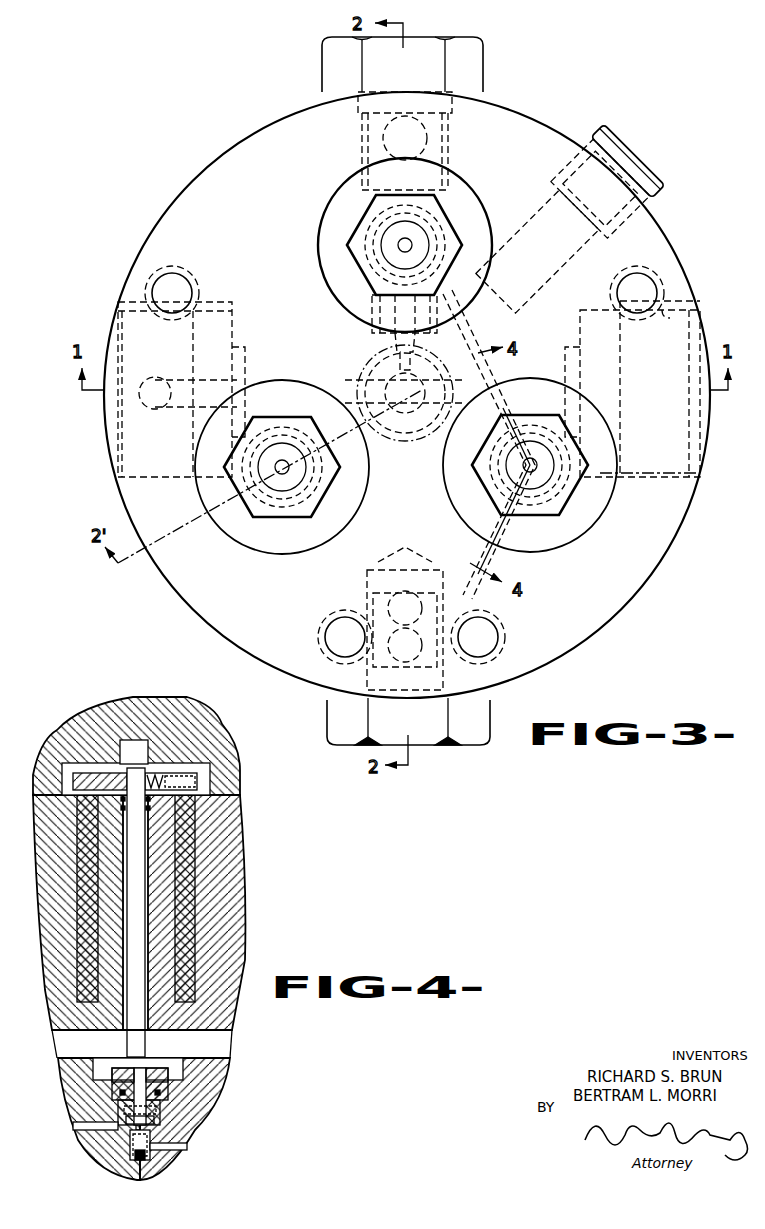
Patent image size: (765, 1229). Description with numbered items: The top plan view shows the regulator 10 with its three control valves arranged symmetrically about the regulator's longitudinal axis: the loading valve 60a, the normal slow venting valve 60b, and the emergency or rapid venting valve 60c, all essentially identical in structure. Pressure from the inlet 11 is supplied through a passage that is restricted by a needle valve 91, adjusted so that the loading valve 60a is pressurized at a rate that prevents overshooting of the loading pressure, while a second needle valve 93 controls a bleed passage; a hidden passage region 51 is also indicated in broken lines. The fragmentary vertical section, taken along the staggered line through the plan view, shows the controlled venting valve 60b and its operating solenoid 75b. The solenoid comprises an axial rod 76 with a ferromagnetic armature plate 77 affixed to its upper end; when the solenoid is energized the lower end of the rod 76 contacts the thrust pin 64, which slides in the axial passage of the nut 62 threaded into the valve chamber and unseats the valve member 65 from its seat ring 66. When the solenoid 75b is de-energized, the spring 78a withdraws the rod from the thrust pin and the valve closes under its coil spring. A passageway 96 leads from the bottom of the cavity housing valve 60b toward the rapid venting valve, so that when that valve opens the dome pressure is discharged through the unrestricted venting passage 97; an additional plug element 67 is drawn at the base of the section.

In FIG. 3, the regulator 10 is at (556, 118).
In FIG. 3, the inlet 11 is at (130, 465).
In FIG. 3, the hidden passage block 51 is at (672, 318).
In FIG. 3, the loading valve 60a is at (452, 215).
In FIG. 3, the normal slow venting valve 60b is at (565, 517).
In FIG. 4, the normal slow venting valve 60b is at (240, 1088).
In FIG. 3, the emergency or rapid venting valve 60c is at (280, 522).
In FIG. 3, the needle valve 91 is at (484, 62).
In FIG. 3, the needle valve 93 is at (493, 712).
In FIG. 4, the armature plate 77 is at (93, 777).
In FIG. 4, the spring 78a is at (150, 805).
In FIG. 4, the axial rod 76 is at (137, 853).
In FIG. 4, the solenoid 75b is at (222, 878).
In FIG. 4, the thrust pin 64 is at (135, 1077).
In FIG. 4, the nut 62 is at (148, 1077).
In FIG. 4, the seat ring 66 is at (147, 1112).
In FIG. 4, the valve member 65 is at (131, 1131).
In FIG. 4, the passageway 96 is at (152, 1148).
In FIG. 4, the plug 67 is at (219, 1162).
In FIG. 4, the venting passage 97 is at (73, 1130).